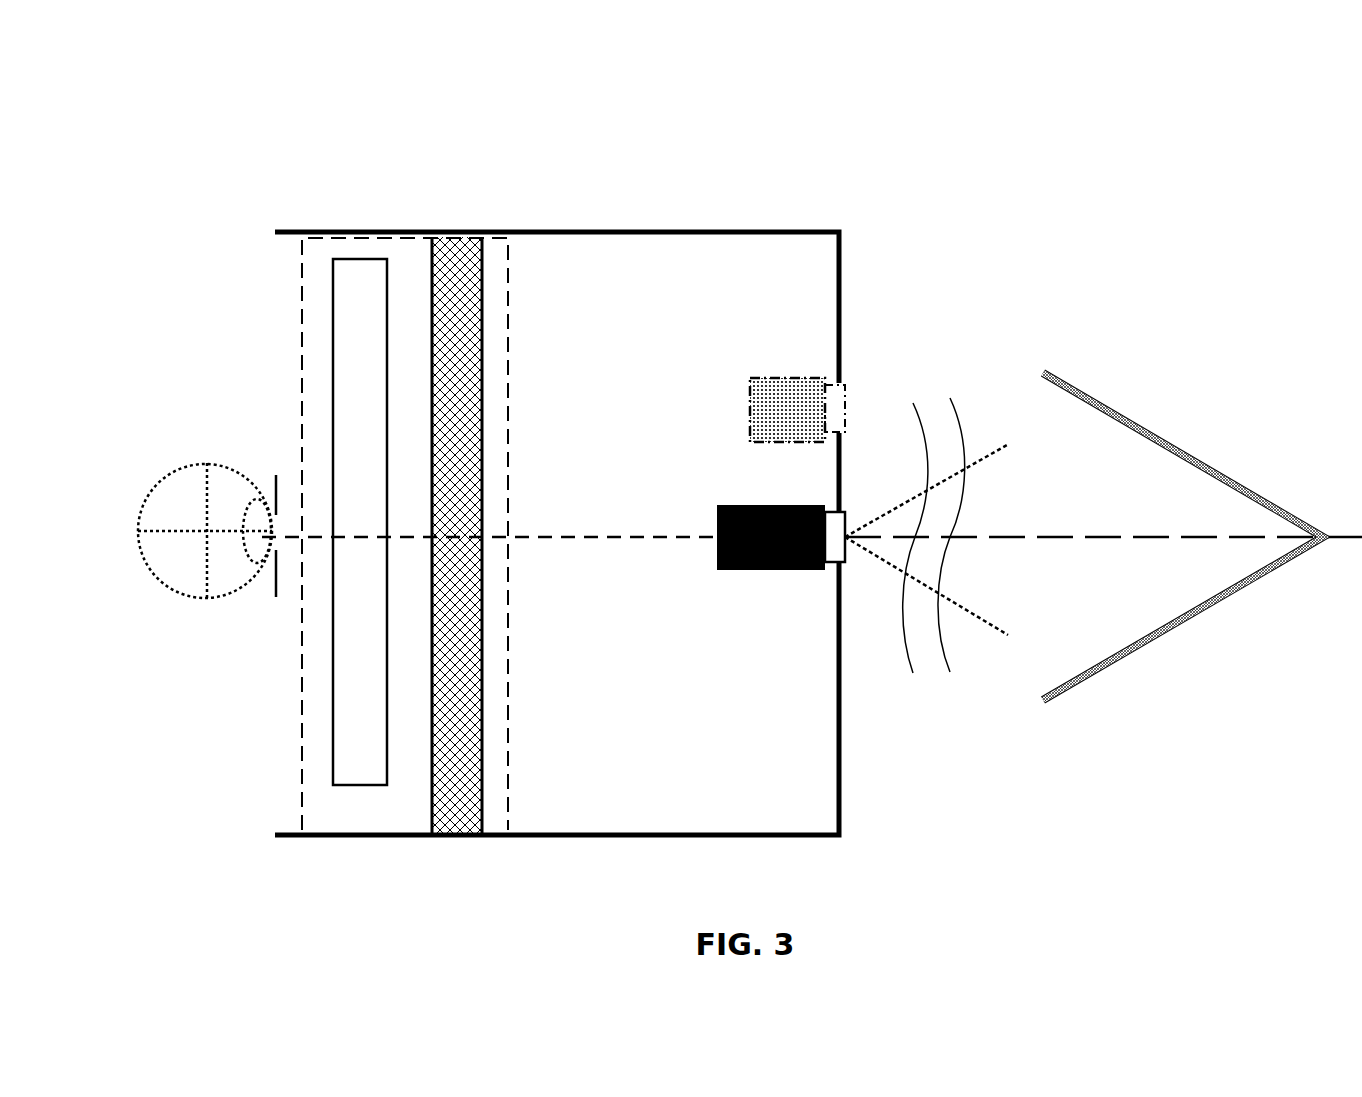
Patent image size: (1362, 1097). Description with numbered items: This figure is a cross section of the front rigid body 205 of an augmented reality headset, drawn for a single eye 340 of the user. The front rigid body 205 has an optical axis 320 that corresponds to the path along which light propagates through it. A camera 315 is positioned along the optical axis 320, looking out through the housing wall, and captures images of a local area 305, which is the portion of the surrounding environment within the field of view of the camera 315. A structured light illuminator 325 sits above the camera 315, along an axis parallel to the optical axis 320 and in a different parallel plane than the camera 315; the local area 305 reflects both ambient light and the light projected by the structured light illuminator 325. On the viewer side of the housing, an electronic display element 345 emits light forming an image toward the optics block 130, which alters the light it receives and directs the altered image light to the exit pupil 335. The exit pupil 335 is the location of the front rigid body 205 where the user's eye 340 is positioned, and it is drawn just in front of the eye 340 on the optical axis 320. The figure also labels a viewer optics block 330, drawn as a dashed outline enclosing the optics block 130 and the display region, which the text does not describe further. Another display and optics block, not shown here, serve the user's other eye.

The front rigid body 205 is at (809, 839).
The Viewer Optics Block 330 is at (296, 753).
The Electronic Display Element 345 is at (487, 275).
The optics block 130 is at (375, 794).
The optical axis 320 is at (607, 541).
The camera 315 is at (716, 503).
The SL illuminator 325 is at (795, 376).
The exit pupil 335 is at (271, 471).
The eye 340 is at (174, 590).
The local area 305 is at (1169, 639).